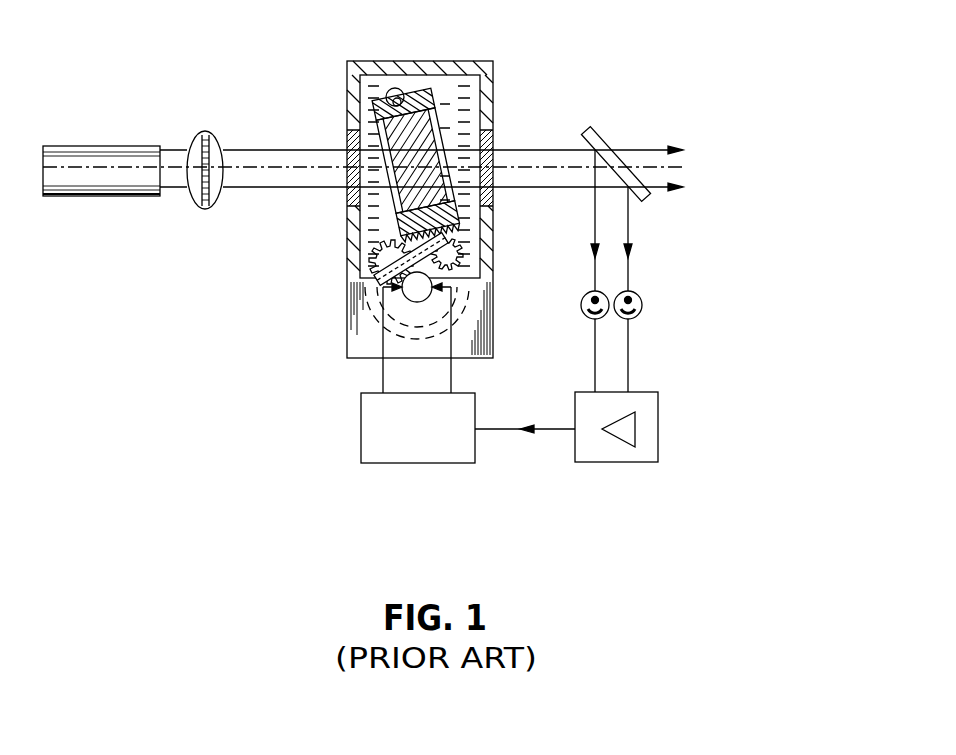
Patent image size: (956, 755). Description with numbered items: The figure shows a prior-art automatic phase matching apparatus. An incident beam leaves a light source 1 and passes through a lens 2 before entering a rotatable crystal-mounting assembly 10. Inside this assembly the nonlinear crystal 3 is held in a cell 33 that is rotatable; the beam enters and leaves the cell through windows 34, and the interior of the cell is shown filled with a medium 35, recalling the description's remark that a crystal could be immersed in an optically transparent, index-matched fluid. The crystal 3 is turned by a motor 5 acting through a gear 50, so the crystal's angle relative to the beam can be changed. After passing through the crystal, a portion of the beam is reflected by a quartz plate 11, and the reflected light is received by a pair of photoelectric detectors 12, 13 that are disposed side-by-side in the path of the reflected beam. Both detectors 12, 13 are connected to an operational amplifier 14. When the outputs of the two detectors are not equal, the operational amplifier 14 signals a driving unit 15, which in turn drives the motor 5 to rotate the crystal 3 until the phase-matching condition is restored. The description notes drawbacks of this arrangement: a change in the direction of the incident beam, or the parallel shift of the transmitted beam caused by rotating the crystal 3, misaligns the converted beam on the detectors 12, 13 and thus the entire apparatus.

The laser light source 1 is at (107, 145).
The lens 2 is at (205, 131).
The tiltable optical filter 3 is at (425, 145).
The motor 5 is at (405, 300).
The filter tilting device 10 is at (417, 197).
The beam splitter mirror 11 is at (604, 140).
The first photodetector 12 is at (582, 300).
The second photodetector 13 is at (641, 300).
The differential amplifier 14 is at (575, 404).
The driving unit 15 is at (361, 432).
The housing 33 is at (350, 77).
The optical windows 34 is at (347, 140).
The liquid filled chamber 35 is at (472, 90).
The gear 50 is at (374, 274).